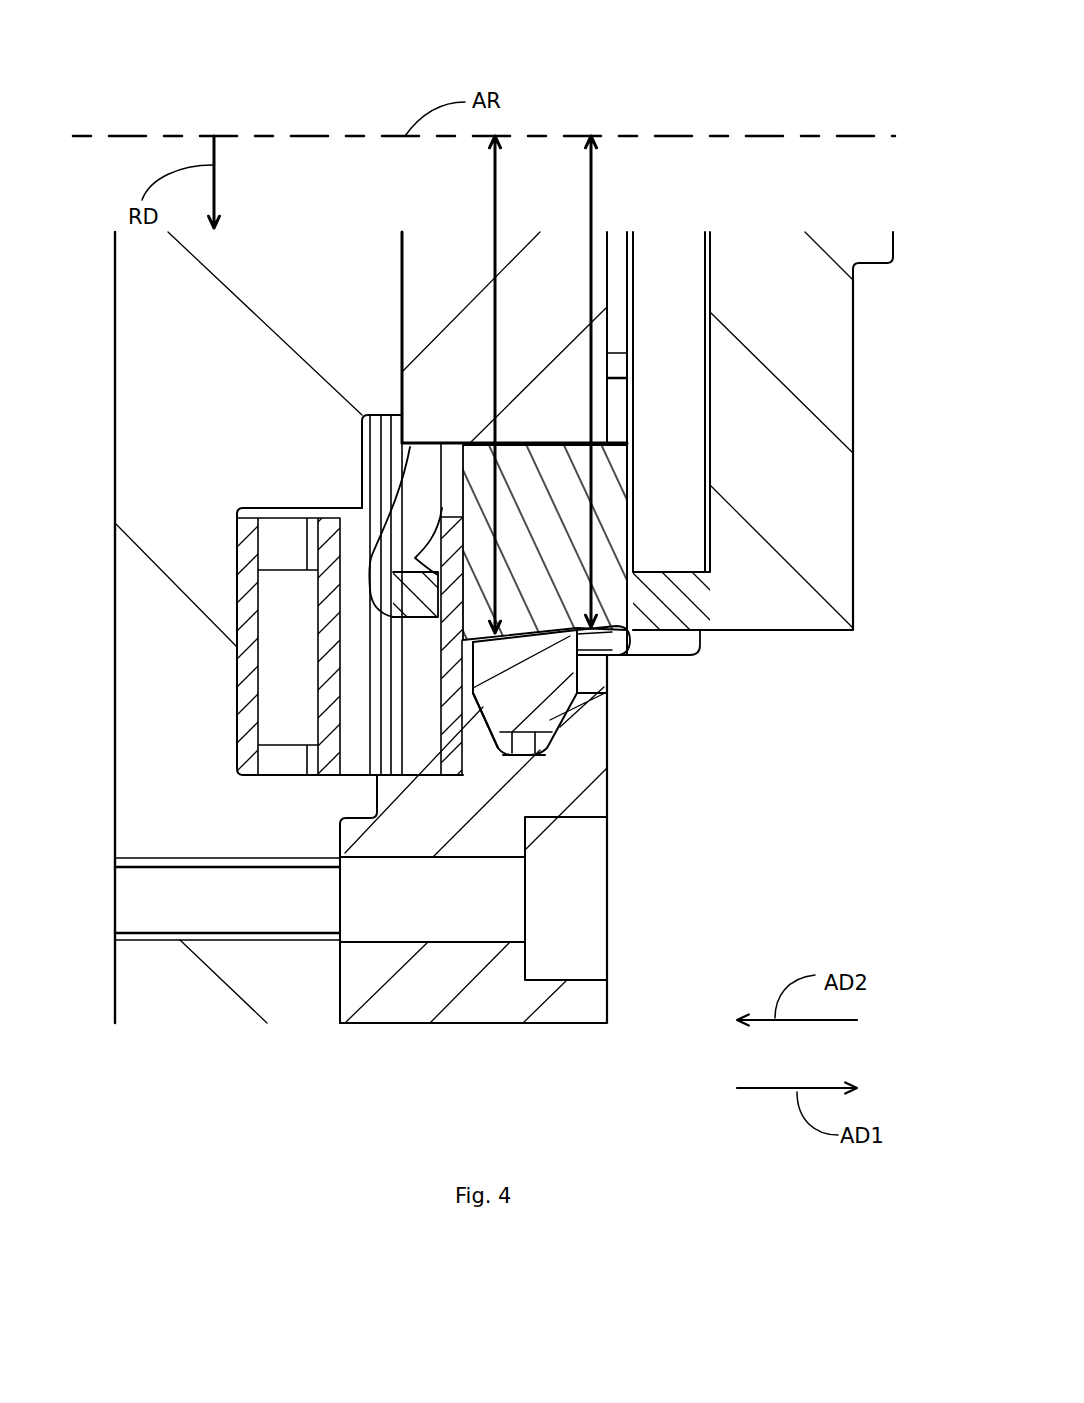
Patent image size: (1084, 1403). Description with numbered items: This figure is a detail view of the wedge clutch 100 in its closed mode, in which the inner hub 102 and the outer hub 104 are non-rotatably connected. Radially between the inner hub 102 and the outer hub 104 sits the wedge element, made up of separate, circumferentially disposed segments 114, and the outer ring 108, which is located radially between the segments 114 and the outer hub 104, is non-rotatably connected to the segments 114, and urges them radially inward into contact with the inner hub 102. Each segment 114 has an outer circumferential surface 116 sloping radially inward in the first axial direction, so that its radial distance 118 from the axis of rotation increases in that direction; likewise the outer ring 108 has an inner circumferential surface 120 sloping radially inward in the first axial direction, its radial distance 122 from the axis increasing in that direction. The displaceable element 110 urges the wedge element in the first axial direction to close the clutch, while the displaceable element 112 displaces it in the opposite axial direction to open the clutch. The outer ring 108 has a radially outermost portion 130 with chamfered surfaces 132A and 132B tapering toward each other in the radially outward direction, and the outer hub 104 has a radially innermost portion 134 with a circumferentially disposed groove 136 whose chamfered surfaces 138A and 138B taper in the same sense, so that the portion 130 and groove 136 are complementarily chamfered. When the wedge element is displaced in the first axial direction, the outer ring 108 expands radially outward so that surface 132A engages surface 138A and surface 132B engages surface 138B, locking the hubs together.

The wedge clutch 100 is at (781, 84).
The inner hub 102 is at (437, 285).
The outer hub 104 is at (622, 1008).
The outer ring 108 is at (458, 664).
The displaceable element 110 is at (417, 477).
The displaceable element 112 is at (853, 427).
The segment 114 is at (565, 542).
The outer circumferential surface 116 is at (627, 661).
The radial distance 118 is at (593, 200).
The inner circumferential surface 120 is at (593, 657).
The radial distance 122 is at (493, 196).
The radially outermost portion 130 is at (471, 866).
The chamfered surface 132A is at (472, 697).
The chamfered surface 132B is at (567, 710).
The radially innermost portion 134 is at (478, 745).
The groove 136 is at (546, 770).
The chamfered surface 138A is at (497, 745).
The chamfered surface 138B is at (545, 745).